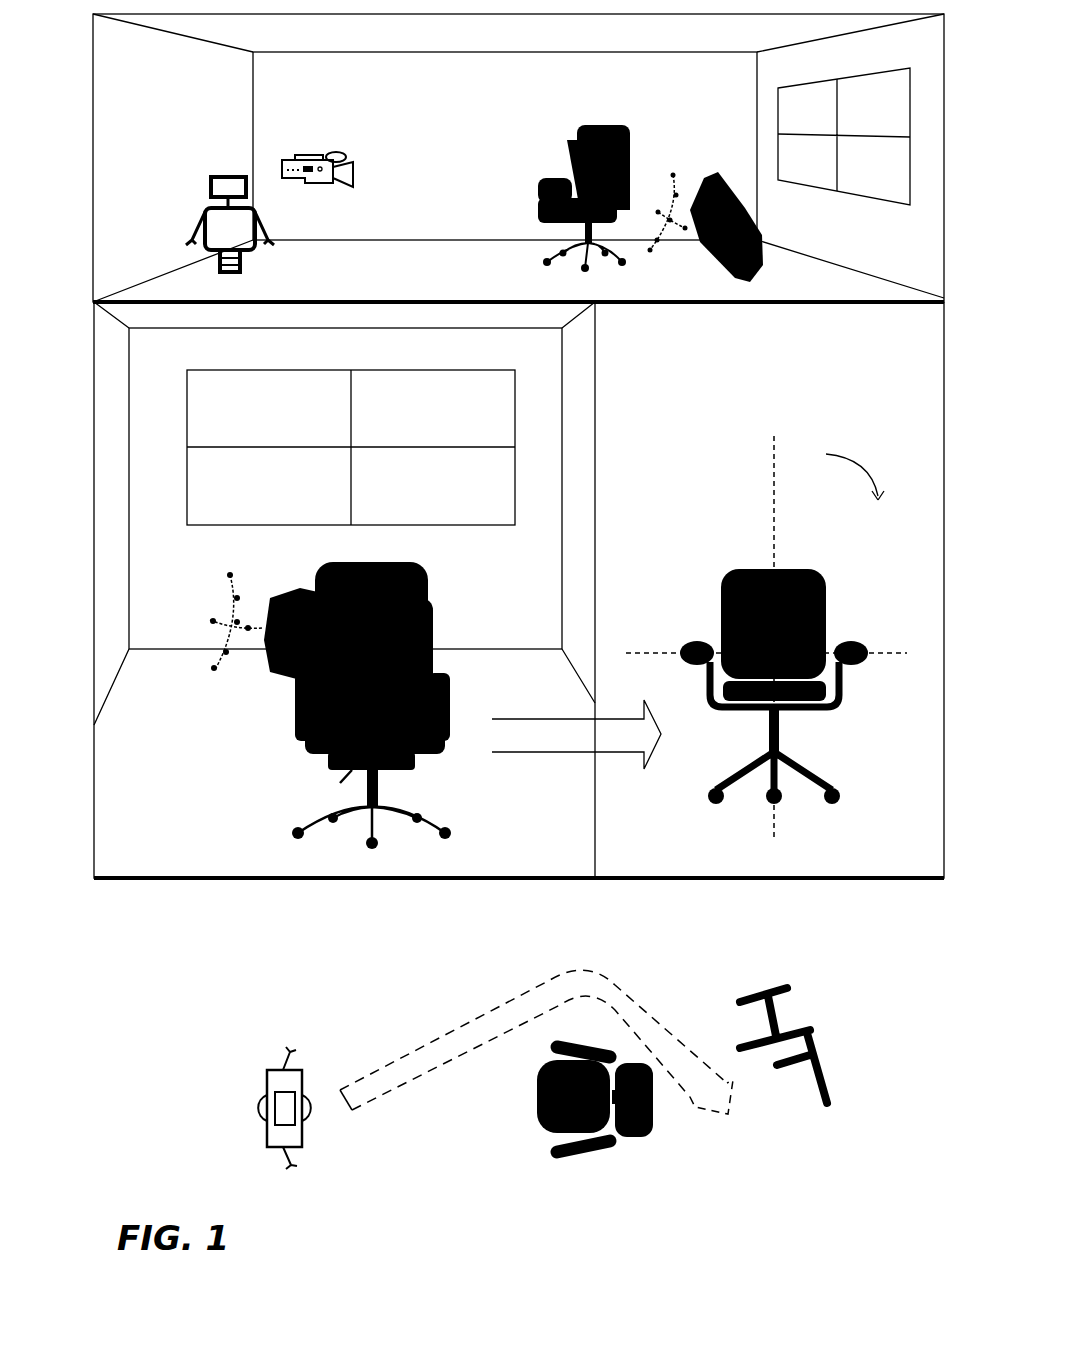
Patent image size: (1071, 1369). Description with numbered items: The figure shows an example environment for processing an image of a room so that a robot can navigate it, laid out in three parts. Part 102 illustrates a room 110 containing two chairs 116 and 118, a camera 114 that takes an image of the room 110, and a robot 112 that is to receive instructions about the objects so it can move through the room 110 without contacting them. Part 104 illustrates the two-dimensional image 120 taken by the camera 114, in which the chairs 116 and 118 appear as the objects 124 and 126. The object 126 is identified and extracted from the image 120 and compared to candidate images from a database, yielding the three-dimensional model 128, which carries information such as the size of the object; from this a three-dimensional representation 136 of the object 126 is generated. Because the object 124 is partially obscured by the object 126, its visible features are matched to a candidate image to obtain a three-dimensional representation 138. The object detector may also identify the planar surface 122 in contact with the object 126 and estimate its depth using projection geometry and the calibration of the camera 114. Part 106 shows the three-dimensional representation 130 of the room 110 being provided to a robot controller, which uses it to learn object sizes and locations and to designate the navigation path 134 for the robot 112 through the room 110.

The part 102 is at (81, 97).
The part 104 is at (81, 368).
The part 106 is at (81, 958).
The room 110 is at (518, 158).
The robot 112 is at (210, 178).
The camera 114 is at (310, 156).
The chair 116 is at (597, 125).
The chair 118 is at (708, 175).
The 2D image 120 is at (519, 590).
The planar surface 122 is at (125, 750).
The object 124 is at (214, 624).
The object 126 is at (432, 593).
The 3D model 128 is at (790, 571).
The 3D representation 130 is at (896, 1247).
The navigation path 134 is at (436, 1034).
The 3D representation 136 is at (651, 1130).
The 3D representation 138 is at (830, 1093).